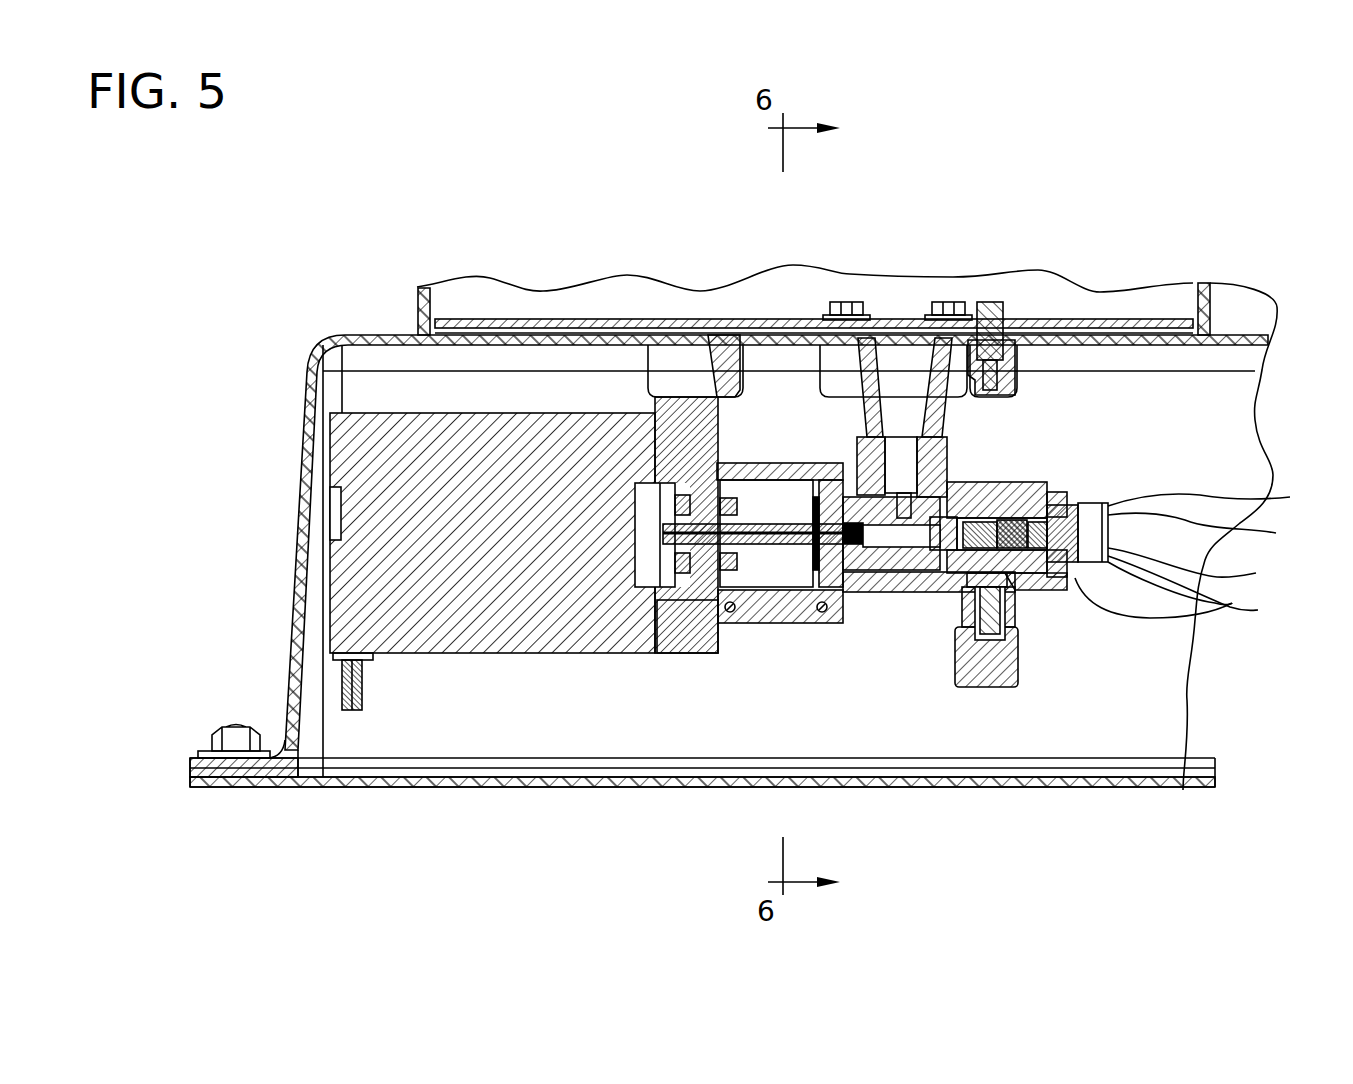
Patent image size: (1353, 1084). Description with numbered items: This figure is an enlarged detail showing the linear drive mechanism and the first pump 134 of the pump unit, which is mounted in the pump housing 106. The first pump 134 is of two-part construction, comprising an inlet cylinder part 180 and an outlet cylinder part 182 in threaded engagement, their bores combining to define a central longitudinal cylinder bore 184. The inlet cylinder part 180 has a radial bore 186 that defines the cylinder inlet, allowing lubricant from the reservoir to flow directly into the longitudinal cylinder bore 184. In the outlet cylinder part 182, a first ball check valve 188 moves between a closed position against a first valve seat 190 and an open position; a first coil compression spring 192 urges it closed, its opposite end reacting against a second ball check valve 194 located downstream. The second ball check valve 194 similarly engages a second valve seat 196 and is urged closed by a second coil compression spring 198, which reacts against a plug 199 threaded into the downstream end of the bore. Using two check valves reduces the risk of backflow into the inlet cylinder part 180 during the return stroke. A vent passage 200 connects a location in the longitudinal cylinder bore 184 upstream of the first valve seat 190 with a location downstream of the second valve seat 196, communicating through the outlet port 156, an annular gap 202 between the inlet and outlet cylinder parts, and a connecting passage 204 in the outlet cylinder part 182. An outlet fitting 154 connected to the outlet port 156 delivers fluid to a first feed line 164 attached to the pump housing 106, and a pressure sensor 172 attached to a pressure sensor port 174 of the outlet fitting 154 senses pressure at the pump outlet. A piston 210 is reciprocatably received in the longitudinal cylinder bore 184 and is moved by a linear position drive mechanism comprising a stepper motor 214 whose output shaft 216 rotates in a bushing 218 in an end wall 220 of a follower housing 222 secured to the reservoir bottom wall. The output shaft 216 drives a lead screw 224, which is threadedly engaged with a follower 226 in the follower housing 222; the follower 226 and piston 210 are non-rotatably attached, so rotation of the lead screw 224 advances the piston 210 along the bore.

The pump housing 106 is at (300, 523).
The first pump 134 is at (795, 735).
The outlet fitting 154 is at (1275, 498).
The outlet port 156 is at (965, 608).
The first feed line 164 is at (1266, 533).
The pressure sensor 172 is at (1018, 665).
The pressure sensor port 174 is at (978, 680).
The inlet cylinder part 180 is at (840, 455).
The outlet cylinder part 182 is at (1232, 603).
The longitudinal cylinder bore 184 is at (953, 475).
The radial bore 186 is at (918, 445).
The first ball check valve 188 is at (980, 515).
The first valve seat 190 is at (952, 497).
The first coil compression spring 192 is at (1005, 518).
The second ball check valve 194 is at (1072, 505).
The second valve seat 196 is at (1047, 490).
The second coil compression spring 198 is at (1245, 575).
The plug 199 is at (1245, 610).
The vent passage 200 is at (907, 595).
The annular gap 202 is at (1023, 573).
The connecting passage 204 is at (1060, 575).
The piston 210 is at (870, 572).
The stepper motor 214 is at (460, 654).
The output shaft 216 is at (657, 533).
The bushing 218 is at (690, 478).
The end wall 220 is at (683, 653).
The follower housing 222 is at (740, 628).
The lead screw 224 is at (775, 553).
The follower 226 is at (813, 493).